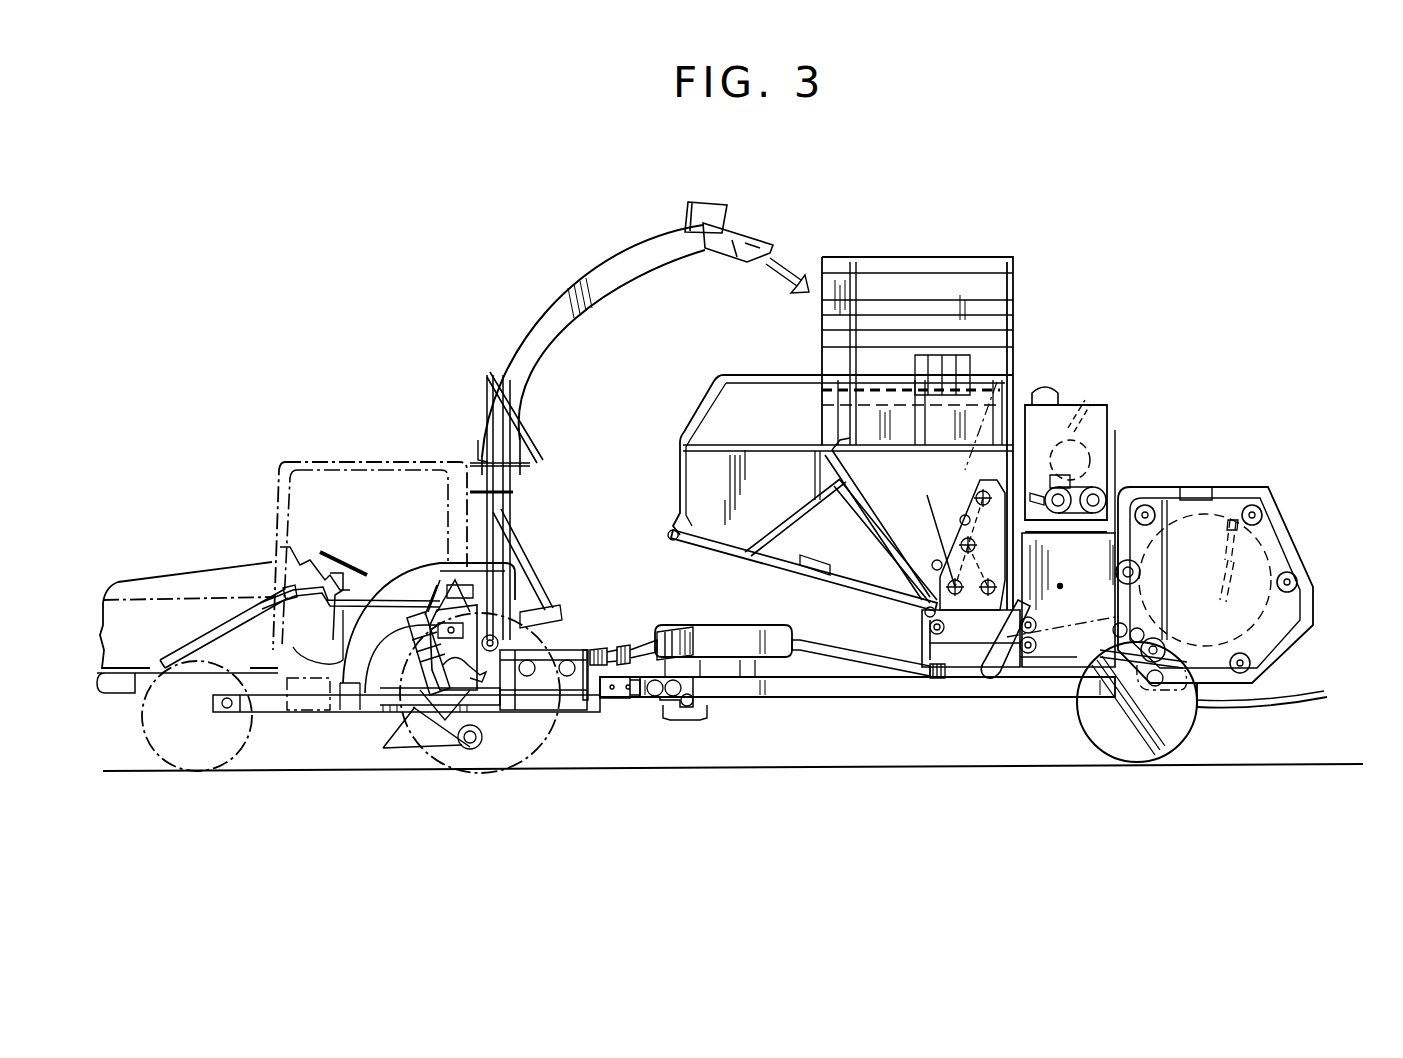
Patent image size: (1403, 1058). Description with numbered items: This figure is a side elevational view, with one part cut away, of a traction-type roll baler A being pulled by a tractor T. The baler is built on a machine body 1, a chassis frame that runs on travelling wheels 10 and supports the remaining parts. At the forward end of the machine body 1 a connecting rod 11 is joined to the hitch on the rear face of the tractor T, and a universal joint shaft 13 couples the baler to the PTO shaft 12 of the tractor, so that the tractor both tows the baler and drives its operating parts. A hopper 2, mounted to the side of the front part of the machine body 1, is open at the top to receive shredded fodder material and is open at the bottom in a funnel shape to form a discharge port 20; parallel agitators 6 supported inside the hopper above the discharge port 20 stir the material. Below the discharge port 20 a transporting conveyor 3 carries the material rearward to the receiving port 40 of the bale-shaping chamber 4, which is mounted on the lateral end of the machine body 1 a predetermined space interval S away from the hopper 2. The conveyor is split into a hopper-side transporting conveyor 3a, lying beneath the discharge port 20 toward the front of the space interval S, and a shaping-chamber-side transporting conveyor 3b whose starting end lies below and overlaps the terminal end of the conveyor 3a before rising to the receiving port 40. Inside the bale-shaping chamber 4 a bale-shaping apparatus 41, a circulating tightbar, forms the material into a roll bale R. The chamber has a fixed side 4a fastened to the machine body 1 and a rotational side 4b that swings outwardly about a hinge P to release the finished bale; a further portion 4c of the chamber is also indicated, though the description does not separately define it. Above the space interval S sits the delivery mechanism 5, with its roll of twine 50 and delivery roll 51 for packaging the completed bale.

The tractor T is at (368, 460).
The roll baler A is at (1293, 443).
The machine body 1 is at (875, 697).
The hopper 2 is at (865, 468).
The transporting conveyor 3 is at (1048, 818).
The hopper-side transporting conveyor 3a is at (963, 637).
The shaping-chamber-side transporting conveyor 3b is at (1113, 613).
The bale-shaping chamber 4 is at (1250, 397).
The fixed side 4a is at (1125, 505).
The rotational side 4b is at (1228, 487).
The support frame bolt 4c is at (1290, 583).
The delivery mechanism 5 is at (1088, 442).
The agitators 6 is at (983, 498).
The travelling wheels 10 is at (1170, 730).
The connecting rod 11 is at (613, 700).
The PTO shaft 12 is at (832, 652).
The universal joint shaft 13 is at (620, 648).
The discharge port 20 is at (932, 600).
The receiving port 40 is at (1122, 603).
The bale-shaping apparatus 41 is at (1265, 637).
The roll of twine 50 is at (1055, 520).
The delivery roll 51 is at (1050, 480).
The hinge P is at (1207, 660).
The roll bale R is at (1265, 610).
The space interval S is at (1060, 587).